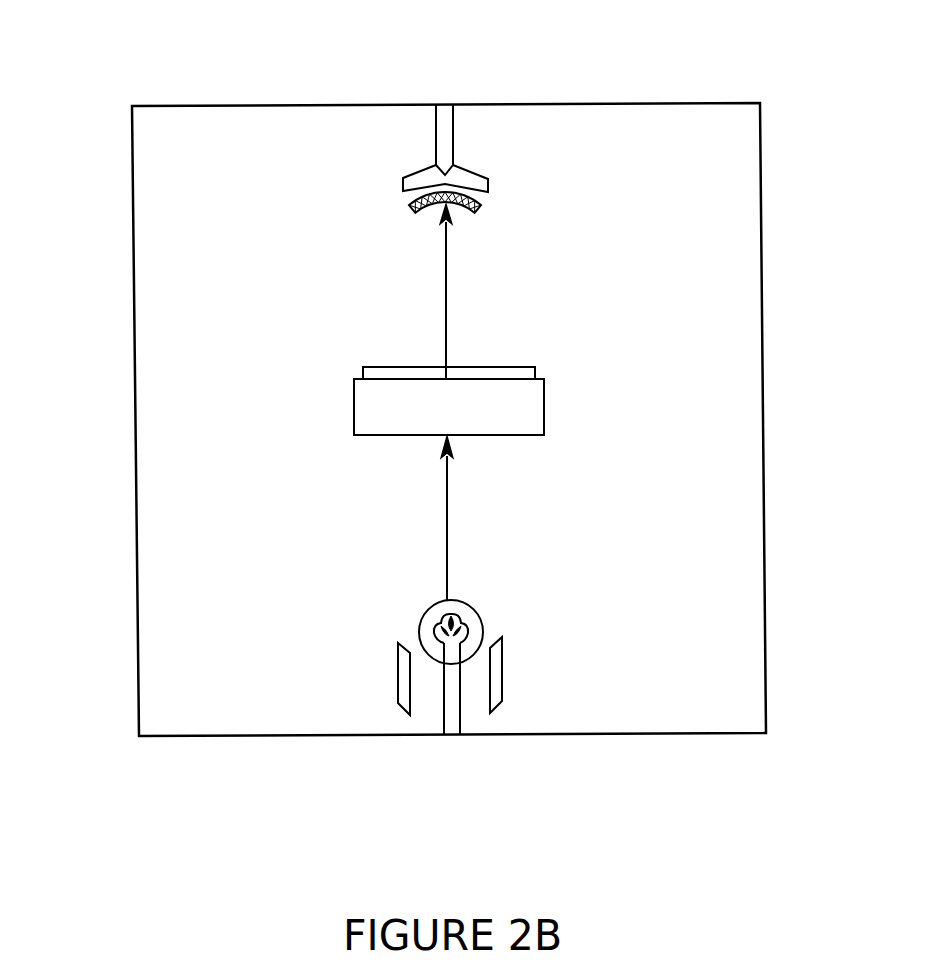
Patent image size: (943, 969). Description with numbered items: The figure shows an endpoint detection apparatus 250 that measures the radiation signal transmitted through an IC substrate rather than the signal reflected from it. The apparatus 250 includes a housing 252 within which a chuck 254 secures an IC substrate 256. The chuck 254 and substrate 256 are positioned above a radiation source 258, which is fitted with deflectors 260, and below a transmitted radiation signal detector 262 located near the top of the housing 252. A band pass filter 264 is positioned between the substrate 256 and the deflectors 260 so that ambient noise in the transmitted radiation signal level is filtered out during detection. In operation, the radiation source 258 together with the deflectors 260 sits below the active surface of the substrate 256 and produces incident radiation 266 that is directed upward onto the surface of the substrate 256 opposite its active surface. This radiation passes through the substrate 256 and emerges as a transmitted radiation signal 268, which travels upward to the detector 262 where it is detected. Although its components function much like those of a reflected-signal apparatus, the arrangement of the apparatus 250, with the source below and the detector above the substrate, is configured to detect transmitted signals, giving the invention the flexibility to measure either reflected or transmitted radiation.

The endpoint detection apparatus 250 is at (217, 80).
The housing 252 is at (763, 509).
The chuck 254 is at (503, 413).
The IC substrate 256 is at (377, 373).
The radiation source 258 is at (466, 600).
The deflectors 260 is at (495, 673).
The transmitted radiation signal detector 262 is at (470, 175).
The band pass filter 264 is at (481, 209).
The incident radiation 266 is at (447, 531).
The transmitted radiation signal 268 is at (447, 276).